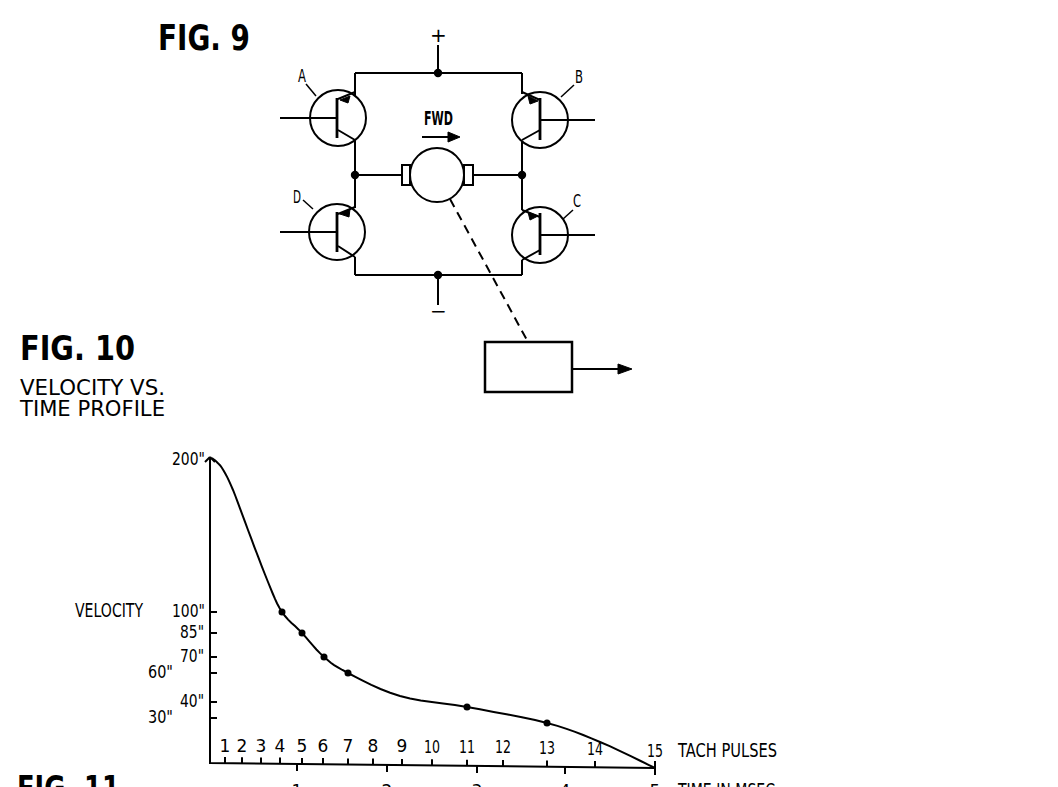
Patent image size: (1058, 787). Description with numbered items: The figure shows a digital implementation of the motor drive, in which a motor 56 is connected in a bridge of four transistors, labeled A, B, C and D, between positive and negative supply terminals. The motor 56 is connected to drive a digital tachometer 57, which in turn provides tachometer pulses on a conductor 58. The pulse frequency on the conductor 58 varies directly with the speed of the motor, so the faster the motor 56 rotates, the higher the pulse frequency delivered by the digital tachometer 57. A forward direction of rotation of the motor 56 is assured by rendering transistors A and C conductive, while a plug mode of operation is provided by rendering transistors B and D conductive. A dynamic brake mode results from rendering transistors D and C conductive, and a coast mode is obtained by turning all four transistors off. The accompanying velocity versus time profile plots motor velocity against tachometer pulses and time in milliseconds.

The motor 56 is at (437, 203).
The digital tachometer 57 is at (538, 343).
The conductor 58 is at (585, 367).